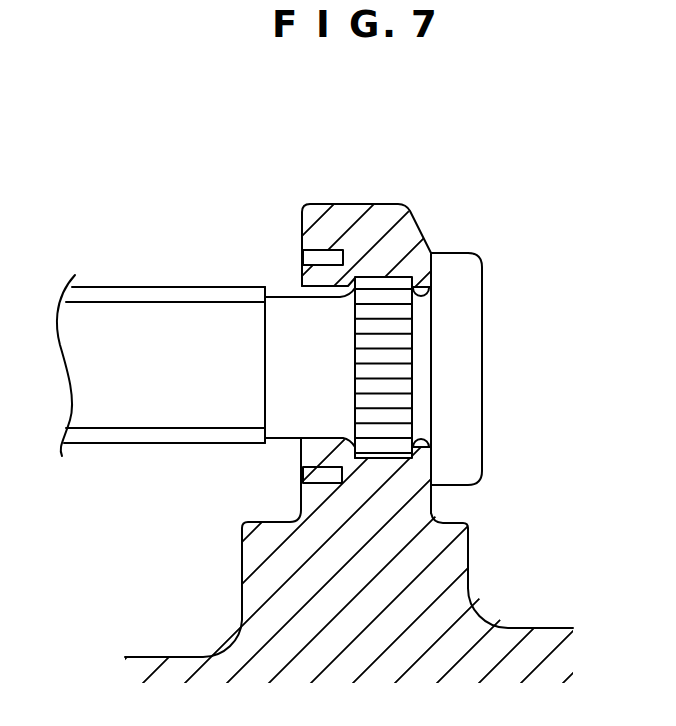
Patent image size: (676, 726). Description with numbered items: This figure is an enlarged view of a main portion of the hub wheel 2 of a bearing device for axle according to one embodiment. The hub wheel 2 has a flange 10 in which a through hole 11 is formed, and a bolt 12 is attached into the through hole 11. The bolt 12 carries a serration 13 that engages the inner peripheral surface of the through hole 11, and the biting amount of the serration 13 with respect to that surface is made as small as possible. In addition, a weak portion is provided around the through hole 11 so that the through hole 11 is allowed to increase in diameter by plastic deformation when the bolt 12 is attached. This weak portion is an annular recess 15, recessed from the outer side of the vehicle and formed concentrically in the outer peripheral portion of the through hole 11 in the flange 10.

The hub wheel 2 is at (509, 626).
The flange 10 is at (351, 201).
The through hole 11 is at (307, 291).
The bolt 12 is at (489, 357).
The serration 13 is at (398, 337).
The annular recess 15 is at (312, 258).